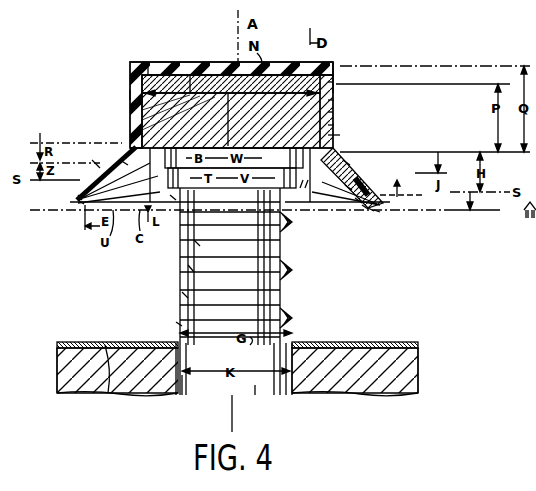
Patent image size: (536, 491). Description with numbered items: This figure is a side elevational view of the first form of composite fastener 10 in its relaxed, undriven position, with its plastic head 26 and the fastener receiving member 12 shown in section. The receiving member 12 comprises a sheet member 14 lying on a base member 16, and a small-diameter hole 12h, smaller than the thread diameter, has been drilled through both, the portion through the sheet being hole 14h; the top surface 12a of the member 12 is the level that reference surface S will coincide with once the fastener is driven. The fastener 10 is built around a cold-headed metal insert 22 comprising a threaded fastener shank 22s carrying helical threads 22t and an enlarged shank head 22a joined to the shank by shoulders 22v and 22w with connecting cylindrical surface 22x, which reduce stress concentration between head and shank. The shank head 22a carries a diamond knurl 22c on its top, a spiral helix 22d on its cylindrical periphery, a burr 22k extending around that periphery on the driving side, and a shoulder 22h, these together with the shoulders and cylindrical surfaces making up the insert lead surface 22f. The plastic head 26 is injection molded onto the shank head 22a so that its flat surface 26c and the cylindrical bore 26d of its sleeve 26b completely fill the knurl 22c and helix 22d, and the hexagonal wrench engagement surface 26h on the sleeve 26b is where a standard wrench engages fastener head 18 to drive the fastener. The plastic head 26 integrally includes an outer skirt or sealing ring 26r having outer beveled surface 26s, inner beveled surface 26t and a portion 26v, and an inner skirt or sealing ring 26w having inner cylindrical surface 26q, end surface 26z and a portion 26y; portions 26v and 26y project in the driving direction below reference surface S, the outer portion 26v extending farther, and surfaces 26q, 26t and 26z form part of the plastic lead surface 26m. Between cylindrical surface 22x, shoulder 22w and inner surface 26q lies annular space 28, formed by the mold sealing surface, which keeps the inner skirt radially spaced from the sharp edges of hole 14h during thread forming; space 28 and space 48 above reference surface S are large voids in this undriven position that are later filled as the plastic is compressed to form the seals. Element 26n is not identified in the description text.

The fastener 10 is at (120, 65).
The fastener receiving member 12 is at (58, 353).
The outer or top surface 12a is at (108, 393).
The hole 12h is at (185, 375).
The sheet member 14 is at (58, 343).
The hole in sheet member 14h is at (255, 386).
The base member 16 is at (72, 367).
The fastener head 18 is at (130, 92).
The metal insert 22 is at (284, 64).
The shank head 22a is at (190, 78).
The diamond knurl 22c is at (333, 75).
The spiral helix 22d is at (333, 83).
The lead surface 22f is at (345, 160).
The shoulder 22h is at (338, 133).
The burr 22k is at (369, 208).
The fastener shank 22s is at (182, 293).
The helical threads 22t is at (178, 322).
The shoulder 22v is at (212, 195).
The shoulder 22w is at (228, 146).
The cylindrical surface 22x is at (195, 244).
The plastic head 26 is at (130, 76).
The sleeve 26b is at (333, 104).
The flat surface 26c is at (148, 72).
The cylindrical bore 26d is at (343, 112).
The wrench engagement surface 26h is at (335, 125).
The lead surface 26m is at (356, 198).
The cover inner lip 26n is at (172, 196).
The inner cylindrical surface 26q is at (300, 188).
The outer skirt or sealing ring 26r is at (124, 160).
The outer conical or beveled surface 26s is at (93, 162).
The inner conical or beveled surface 26t is at (348, 186).
The portion of outer skirt 26v is at (78, 200).
The inner skirt or sealing ring 26w is at (78, 194).
The portion of inner skirt 26y is at (375, 210).
The end surface 26z is at (306, 188).
The space 28 is at (190, 267).
The space 48 is at (363, 204).